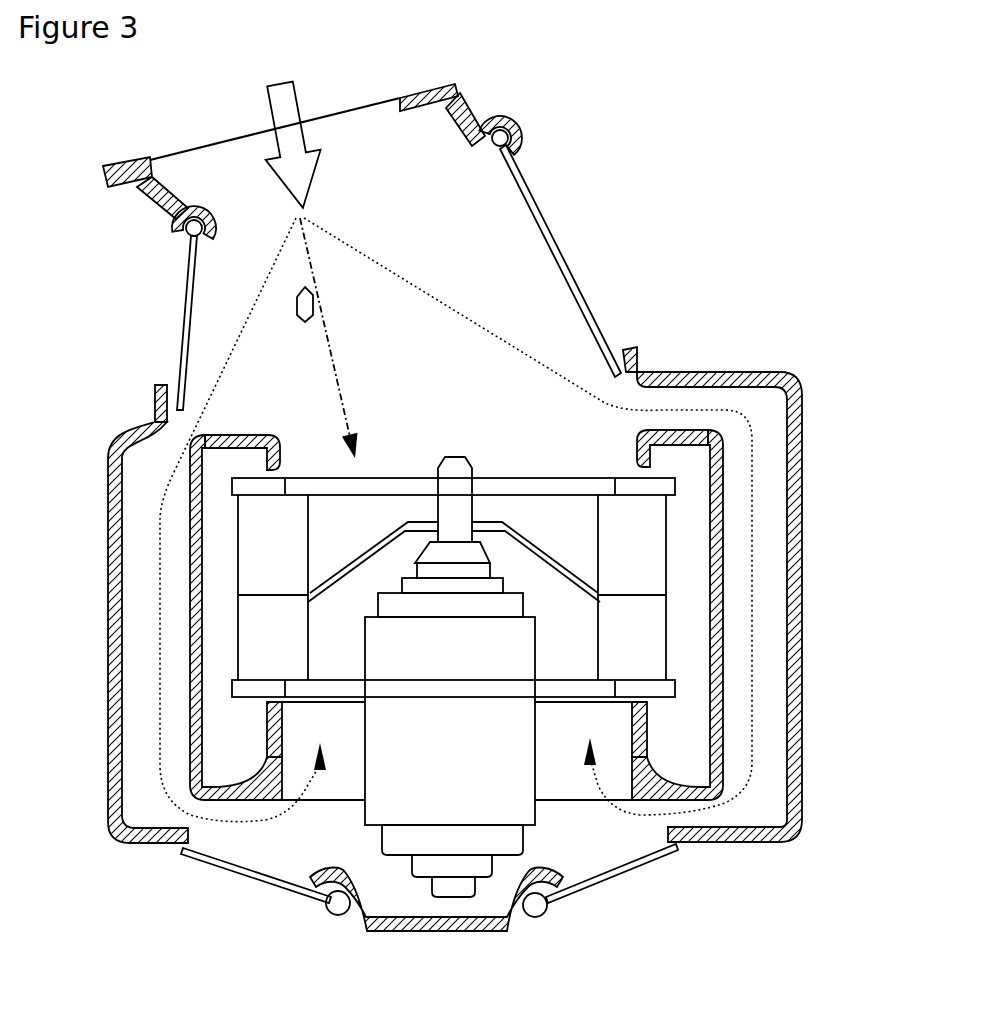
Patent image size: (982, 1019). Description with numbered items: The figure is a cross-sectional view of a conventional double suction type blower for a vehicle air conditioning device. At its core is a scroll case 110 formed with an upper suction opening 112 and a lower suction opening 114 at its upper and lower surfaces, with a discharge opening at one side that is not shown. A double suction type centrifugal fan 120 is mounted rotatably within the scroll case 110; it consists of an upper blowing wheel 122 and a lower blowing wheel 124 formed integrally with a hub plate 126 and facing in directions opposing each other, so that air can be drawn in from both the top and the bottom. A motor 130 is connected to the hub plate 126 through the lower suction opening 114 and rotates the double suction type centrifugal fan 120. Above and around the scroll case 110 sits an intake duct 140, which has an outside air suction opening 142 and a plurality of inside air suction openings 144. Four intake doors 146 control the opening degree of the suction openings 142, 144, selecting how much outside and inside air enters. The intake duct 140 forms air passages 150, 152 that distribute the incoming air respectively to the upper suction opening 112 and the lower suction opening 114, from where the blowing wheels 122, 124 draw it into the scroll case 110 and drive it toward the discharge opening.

The scroll case 110 is at (178, 565).
The upper suction opening 112 is at (280, 440).
The lower suction opening 114 is at (281, 778).
The double suction type centrifugal fan 120 is at (507, 468).
The upper blowing wheel 122 is at (643, 554).
The lower blowing wheel 124 is at (640, 643).
The hub plate 126 is at (400, 522).
The motor 130 is at (512, 800).
The intake duct 140 is at (553, 122).
The outside air suction opening 142 is at (222, 142).
The inside air suction openings 144 is at (567, 223).
The intake doors 146 is at (598, 307).
The air passage 150 is at (394, 398).
The air passage 152 is at (150, 632).